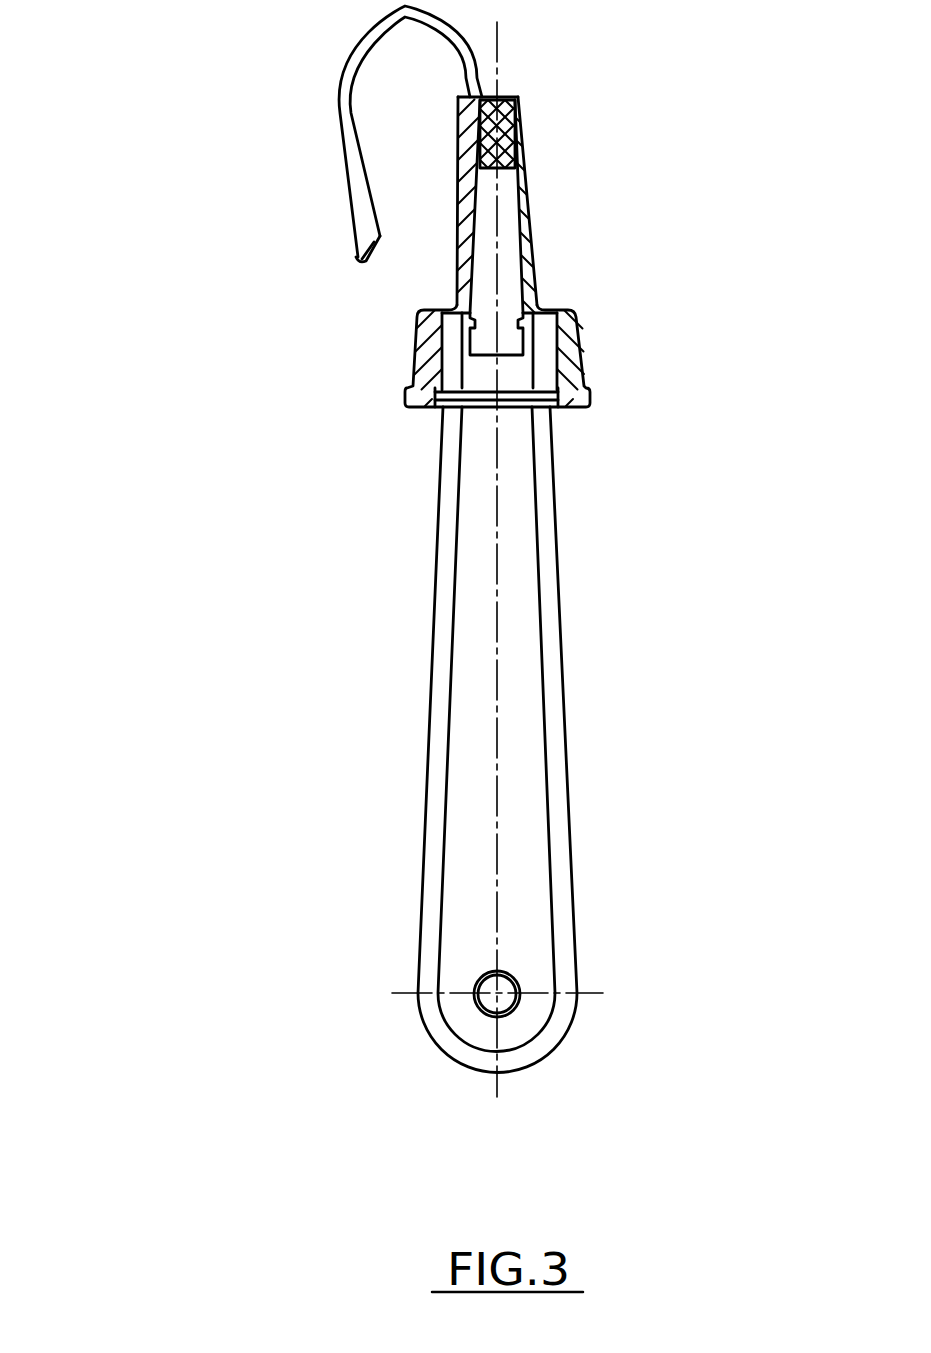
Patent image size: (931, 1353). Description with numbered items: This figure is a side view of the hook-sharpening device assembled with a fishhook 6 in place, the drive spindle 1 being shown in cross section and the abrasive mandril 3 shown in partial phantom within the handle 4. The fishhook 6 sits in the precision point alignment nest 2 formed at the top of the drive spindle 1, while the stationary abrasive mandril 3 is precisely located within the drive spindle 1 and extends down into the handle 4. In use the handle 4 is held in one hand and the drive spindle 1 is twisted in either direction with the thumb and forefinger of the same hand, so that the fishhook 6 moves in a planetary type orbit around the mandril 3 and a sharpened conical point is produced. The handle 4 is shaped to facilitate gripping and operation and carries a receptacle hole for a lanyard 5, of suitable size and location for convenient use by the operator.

The drive spindle 1 is at (457, 263).
The precision point alignment nest 2 is at (478, 93).
The abrasive mandril 3 is at (515, 287).
The handle 4 is at (560, 652).
The lanyard receptacle hole 5 is at (518, 980).
The fishhook 6 is at (340, 113).